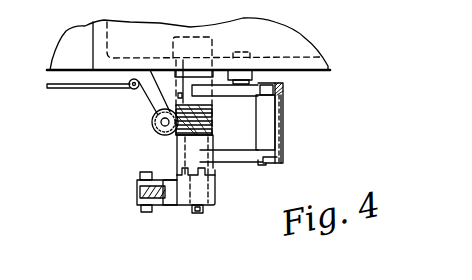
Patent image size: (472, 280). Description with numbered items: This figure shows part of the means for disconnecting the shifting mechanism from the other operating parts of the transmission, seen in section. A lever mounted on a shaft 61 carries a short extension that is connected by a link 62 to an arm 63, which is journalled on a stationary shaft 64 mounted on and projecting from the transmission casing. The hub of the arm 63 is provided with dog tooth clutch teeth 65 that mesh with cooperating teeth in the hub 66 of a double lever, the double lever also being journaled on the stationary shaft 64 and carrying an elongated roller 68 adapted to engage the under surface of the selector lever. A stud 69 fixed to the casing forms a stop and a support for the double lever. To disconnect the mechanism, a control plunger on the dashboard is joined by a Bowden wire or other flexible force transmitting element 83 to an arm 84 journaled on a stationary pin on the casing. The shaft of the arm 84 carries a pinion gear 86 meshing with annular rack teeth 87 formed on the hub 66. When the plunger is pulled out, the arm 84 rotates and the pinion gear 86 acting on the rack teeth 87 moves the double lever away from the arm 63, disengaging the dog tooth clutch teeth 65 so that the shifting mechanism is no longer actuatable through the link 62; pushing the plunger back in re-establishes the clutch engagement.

The flexible force transmitting element 83 is at (82, 89).
The arm 84 is at (142, 97).
The pinion gear 86 is at (172, 108).
The annular rack teeth 87 is at (222, 93).
The shaft 61 is at (232, 157).
The stud 69 is at (254, 83).
The elongated roller 68 is at (286, 121).
The hub 66 is at (177, 152).
The dog tooth clutch teeth 65 is at (218, 174).
The link 62 is at (137, 192).
The arm 63 is at (173, 197).
The stationary shaft 64 is at (205, 213).